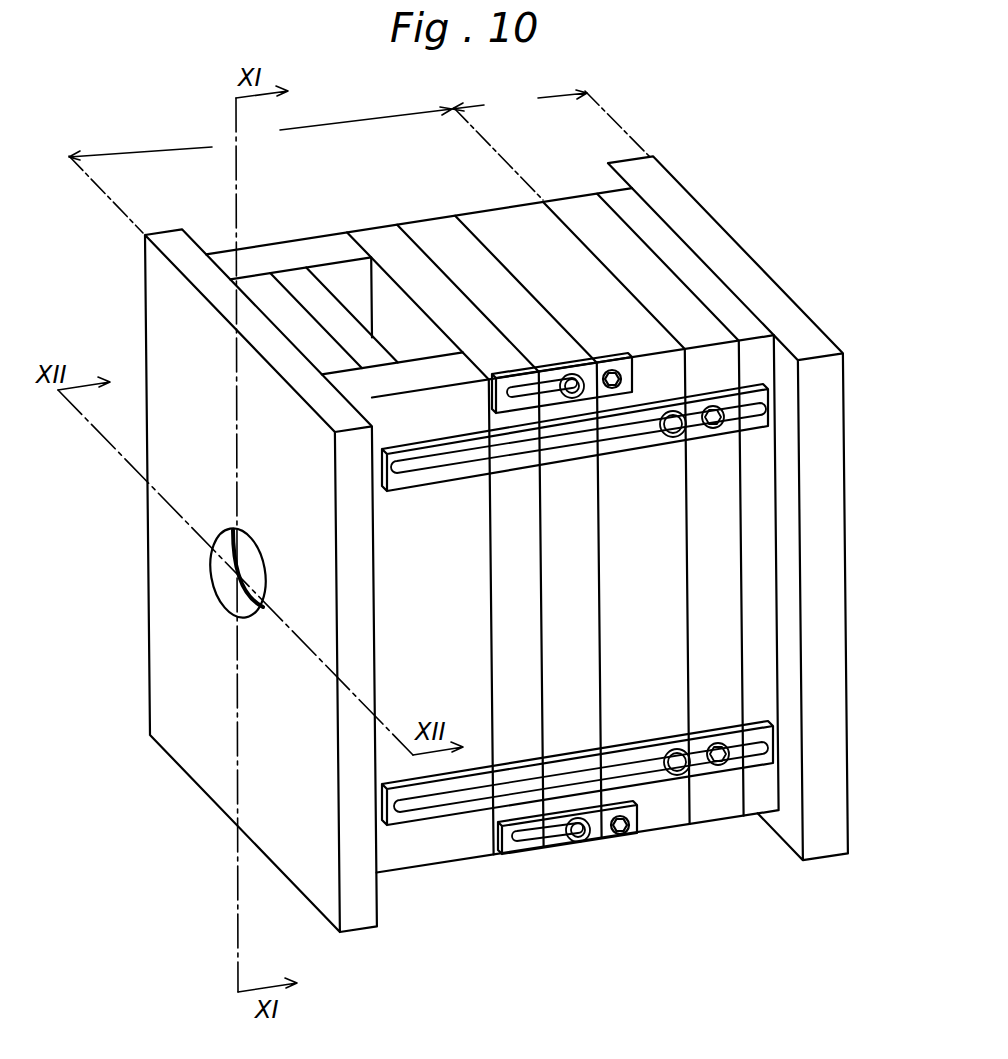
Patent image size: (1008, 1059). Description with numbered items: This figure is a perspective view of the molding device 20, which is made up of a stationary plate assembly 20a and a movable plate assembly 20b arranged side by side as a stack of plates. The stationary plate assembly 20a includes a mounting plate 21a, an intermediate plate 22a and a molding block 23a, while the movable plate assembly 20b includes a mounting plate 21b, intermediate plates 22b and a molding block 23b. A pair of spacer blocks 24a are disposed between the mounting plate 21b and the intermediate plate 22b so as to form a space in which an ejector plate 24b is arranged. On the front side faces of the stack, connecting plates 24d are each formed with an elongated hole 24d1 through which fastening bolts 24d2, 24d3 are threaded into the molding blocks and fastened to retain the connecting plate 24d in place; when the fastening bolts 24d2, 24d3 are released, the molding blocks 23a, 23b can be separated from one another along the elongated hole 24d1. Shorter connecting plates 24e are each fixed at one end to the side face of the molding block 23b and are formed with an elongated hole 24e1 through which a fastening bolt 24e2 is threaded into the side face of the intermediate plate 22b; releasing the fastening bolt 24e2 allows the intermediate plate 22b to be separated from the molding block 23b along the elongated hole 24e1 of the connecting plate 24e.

The molding device 20 is at (689, 179).
The stationary plate assembly 20a is at (551, 123).
The movable plate assembly 20b is at (306, 170).
The mounting plate 21a is at (708, 227).
The mounting plate 21b is at (168, 327).
The intermediate plate 22a is at (723, 315).
The intermediate plate 22b is at (380, 238).
The molding block 23a is at (582, 210).
The molding block 23b is at (515, 223).
The spacer blocks 24a is at (328, 244).
The ejector plate 24b is at (295, 283).
The connecting plate 24d is at (433, 478).
The elongated hole 24d1 is at (442, 800).
The fastening bolt 24d2 is at (723, 765).
The fastening bolt 24d3 is at (678, 777).
The connecting plate 24e is at (495, 388).
The elongated hole 24e1 is at (537, 840).
The fastening bolt 24e2 is at (580, 833).